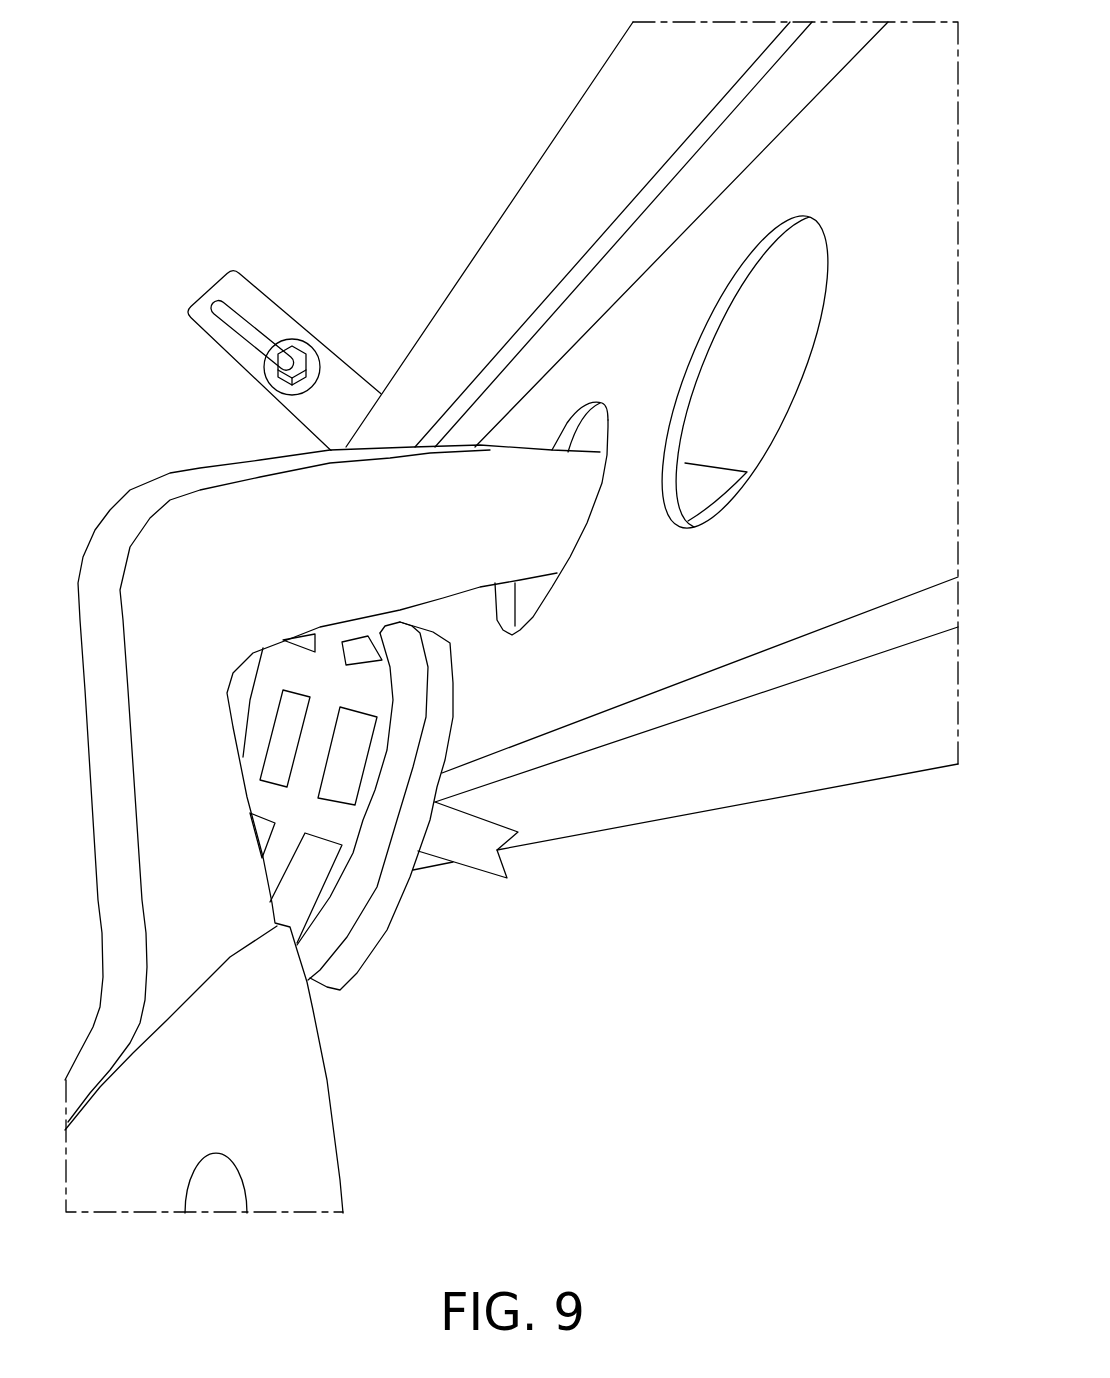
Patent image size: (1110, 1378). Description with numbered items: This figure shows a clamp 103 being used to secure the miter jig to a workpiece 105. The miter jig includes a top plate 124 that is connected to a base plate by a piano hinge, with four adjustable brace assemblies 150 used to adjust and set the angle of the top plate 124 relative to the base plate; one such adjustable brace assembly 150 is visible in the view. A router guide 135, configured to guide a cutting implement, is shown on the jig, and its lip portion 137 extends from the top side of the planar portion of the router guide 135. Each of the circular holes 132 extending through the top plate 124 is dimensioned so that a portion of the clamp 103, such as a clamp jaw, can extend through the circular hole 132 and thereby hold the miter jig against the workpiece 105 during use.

The clamp 103 is at (203, 478).
The workpiece 105 is at (763, 772).
The top plate 124 is at (620, 678).
The circular hole 132 is at (573, 413).
The router guide 135 is at (548, 233).
The lip portion 137 is at (638, 208).
The adjustable brace assembly 150 is at (208, 290).